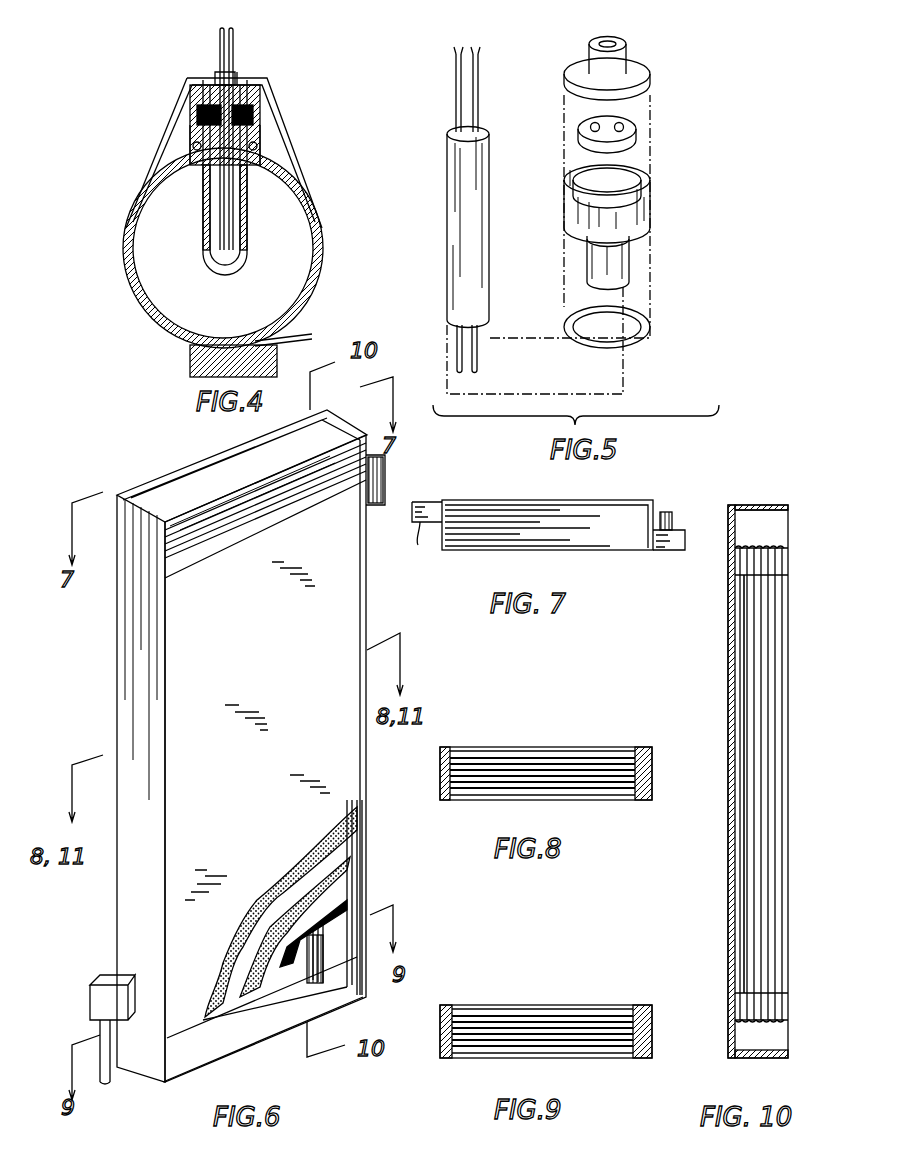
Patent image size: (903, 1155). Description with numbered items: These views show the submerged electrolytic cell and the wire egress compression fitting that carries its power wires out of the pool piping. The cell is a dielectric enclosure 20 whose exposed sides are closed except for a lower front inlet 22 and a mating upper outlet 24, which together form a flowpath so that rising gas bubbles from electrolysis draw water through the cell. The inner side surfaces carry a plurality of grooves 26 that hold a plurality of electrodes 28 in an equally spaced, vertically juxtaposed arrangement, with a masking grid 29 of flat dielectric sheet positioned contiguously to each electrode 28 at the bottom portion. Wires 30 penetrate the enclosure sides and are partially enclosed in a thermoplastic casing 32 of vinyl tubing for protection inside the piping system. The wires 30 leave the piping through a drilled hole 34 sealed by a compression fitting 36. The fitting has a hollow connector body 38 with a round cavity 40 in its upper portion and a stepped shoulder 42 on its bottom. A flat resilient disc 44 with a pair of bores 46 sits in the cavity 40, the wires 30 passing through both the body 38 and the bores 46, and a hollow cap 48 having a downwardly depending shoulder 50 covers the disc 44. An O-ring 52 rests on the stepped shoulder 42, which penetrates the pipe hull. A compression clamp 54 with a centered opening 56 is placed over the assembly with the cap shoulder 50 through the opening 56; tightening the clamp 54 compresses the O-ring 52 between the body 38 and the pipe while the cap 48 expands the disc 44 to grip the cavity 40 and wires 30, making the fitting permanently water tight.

In FIG. 6, the dielectric enclosure 20 is at (118, 702).
In FIG. 7, the dielectric enclosure 20 is at (510, 500).
In FIG. 8, the dielectric enclosure 20 is at (498, 748).
In FIG. 9, the dielectric enclosure 20 is at (498, 1005).
In FIG. 10, the dielectric enclosure 20 is at (730, 505).
In FIG. 10, the inlet 22 is at (786, 1058).
In FIG. 6, the outlet 24 is at (205, 520).
In FIG. 10, the outlet 24 is at (770, 532).
In FIG. 6, the grooves 26 is at (354, 872).
In FIG. 8, the grooves 26 is at (634, 750).
In FIG. 9, the grooves 26 is at (634, 1006).
In FIG. 10, the grooves 26 is at (745, 556).
In FIG. 6, the electrodes 28 is at (360, 808).
In FIG. 8, the electrodes 28 is at (575, 760).
In FIG. 10, the electrodes 28 is at (746, 860).
In FIG. 6, the masking grid 29 is at (222, 1012).
In FIG. 9, the masking grid 29 is at (597, 1040).
In FIG. 10, the masking grid 29 is at (736, 580).
In FIG. 4, the wires 30 is at (130, 340).
In FIG. 5, the wires 30 is at (455, 101).
In FIG. 6, the wires 30 is at (386, 480).
In FIG. 7, the wires 30 is at (666, 512).
In FIG. 4, the thermoplastic casing 32 is at (248, 238).
In FIG. 5, the thermoplastic casing 32 is at (448, 190).
In FIG. 4, the drilled hole 34 is at (190, 168).
In FIG. 4, the compression fitting 36 is at (258, 90).
In FIG. 4, the hollow connector body 38 is at (254, 115).
In FIG. 5, the hollow connector body 38 is at (652, 217).
In FIG. 5, the round cavity 40 is at (578, 205).
In FIG. 5, the stepped shoulder 42 is at (630, 272).
In FIG. 4, the flat resilient disc 44 is at (195, 122).
In FIG. 5, the flat resilient disc 44 is at (637, 125).
In FIG. 5, the bores 46 is at (590, 134).
In FIG. 4, the hollow cap 48 is at (212, 84).
In FIG. 5, the hollow cap 48 is at (627, 48).
In FIG. 5, the downwardly depending shoulder 50 is at (651, 74).
In FIG. 4, the O-ring 52 is at (258, 148).
In FIG. 5, the O-ring 52 is at (651, 330).
In FIG. 4, the compression clamp 54 is at (186, 108).
In FIG. 4, the opening 56 is at (238, 88).